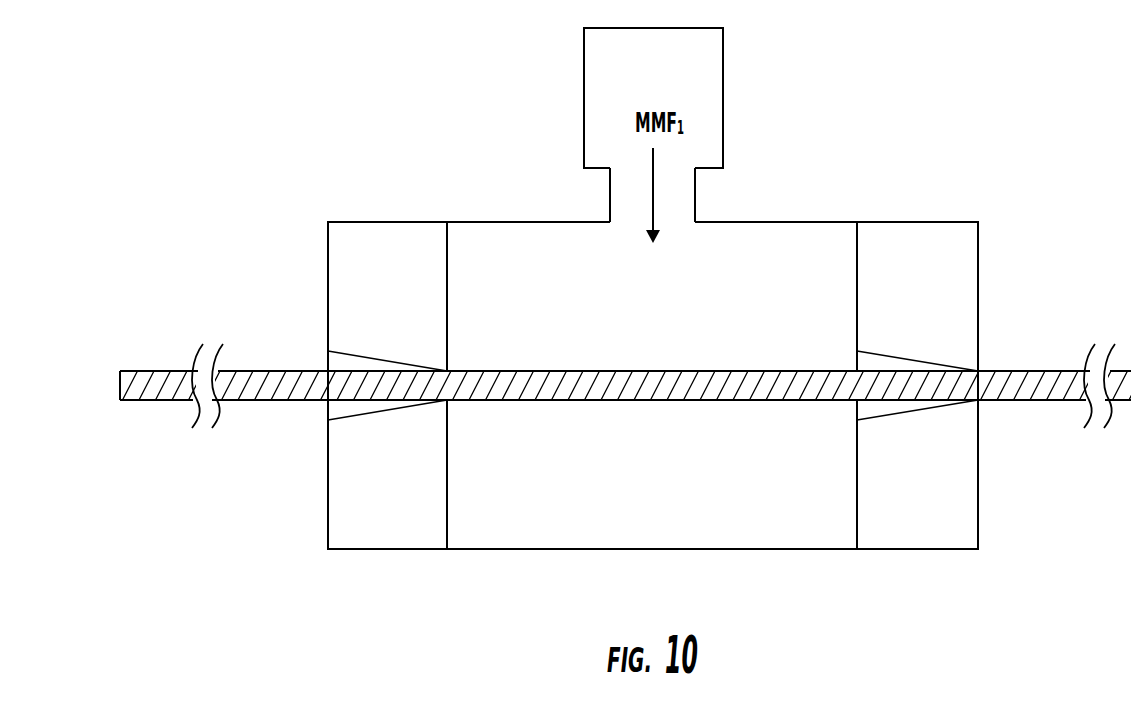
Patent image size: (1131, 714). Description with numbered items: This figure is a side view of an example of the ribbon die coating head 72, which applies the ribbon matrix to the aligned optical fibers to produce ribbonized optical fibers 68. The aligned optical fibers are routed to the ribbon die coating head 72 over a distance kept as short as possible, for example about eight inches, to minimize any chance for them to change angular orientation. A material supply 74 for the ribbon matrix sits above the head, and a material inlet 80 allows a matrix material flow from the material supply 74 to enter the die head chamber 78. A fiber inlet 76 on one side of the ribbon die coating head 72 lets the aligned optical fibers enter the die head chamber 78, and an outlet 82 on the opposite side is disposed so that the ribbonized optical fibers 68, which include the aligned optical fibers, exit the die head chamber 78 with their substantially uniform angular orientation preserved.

The ribbonized optical fibers 68 is at (1022, 370).
The ribbon die coating head 72 is at (942, 163).
The material supply 74 is at (736, 88).
The fiber inlet 76 is at (397, 360).
The die head chamber 78 is at (548, 533).
The material inlet 80 is at (697, 207).
The outlet 82 is at (890, 355).